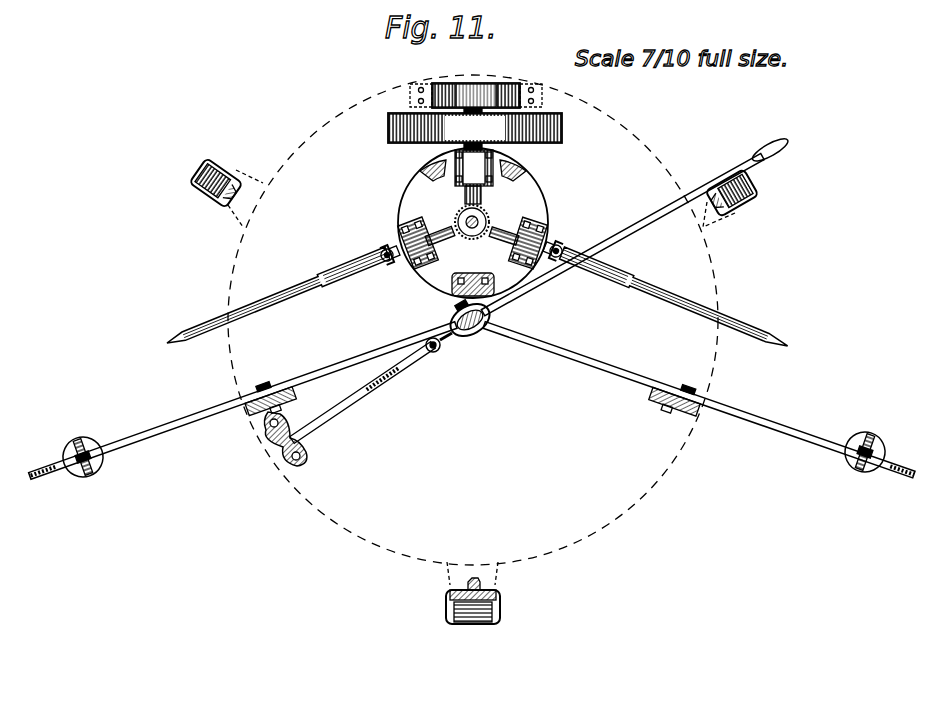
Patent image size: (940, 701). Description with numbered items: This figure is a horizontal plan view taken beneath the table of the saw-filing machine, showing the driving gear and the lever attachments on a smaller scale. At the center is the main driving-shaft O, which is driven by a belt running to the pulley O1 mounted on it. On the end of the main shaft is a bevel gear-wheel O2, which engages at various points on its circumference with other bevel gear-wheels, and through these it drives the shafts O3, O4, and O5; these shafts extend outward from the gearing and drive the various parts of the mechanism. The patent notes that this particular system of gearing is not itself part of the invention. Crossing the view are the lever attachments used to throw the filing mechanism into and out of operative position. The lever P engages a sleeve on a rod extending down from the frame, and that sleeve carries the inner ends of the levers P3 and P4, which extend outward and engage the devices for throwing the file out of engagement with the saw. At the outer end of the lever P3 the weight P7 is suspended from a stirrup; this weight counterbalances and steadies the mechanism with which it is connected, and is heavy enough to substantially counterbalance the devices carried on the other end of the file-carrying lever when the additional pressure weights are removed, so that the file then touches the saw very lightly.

The main driving-shaft O is at (490, 148).
The pulley O1 is at (563, 128).
The bevel gear-wheel O2 is at (500, 192).
The driving shaft O3 is at (458, 215).
The driving shaft O4 is at (393, 247).
The driving shaft O5 is at (557, 247).
The lever P is at (650, 215).
The lever P3 is at (342, 362).
The lever P4 is at (641, 378).
The weight P7 is at (95, 442).